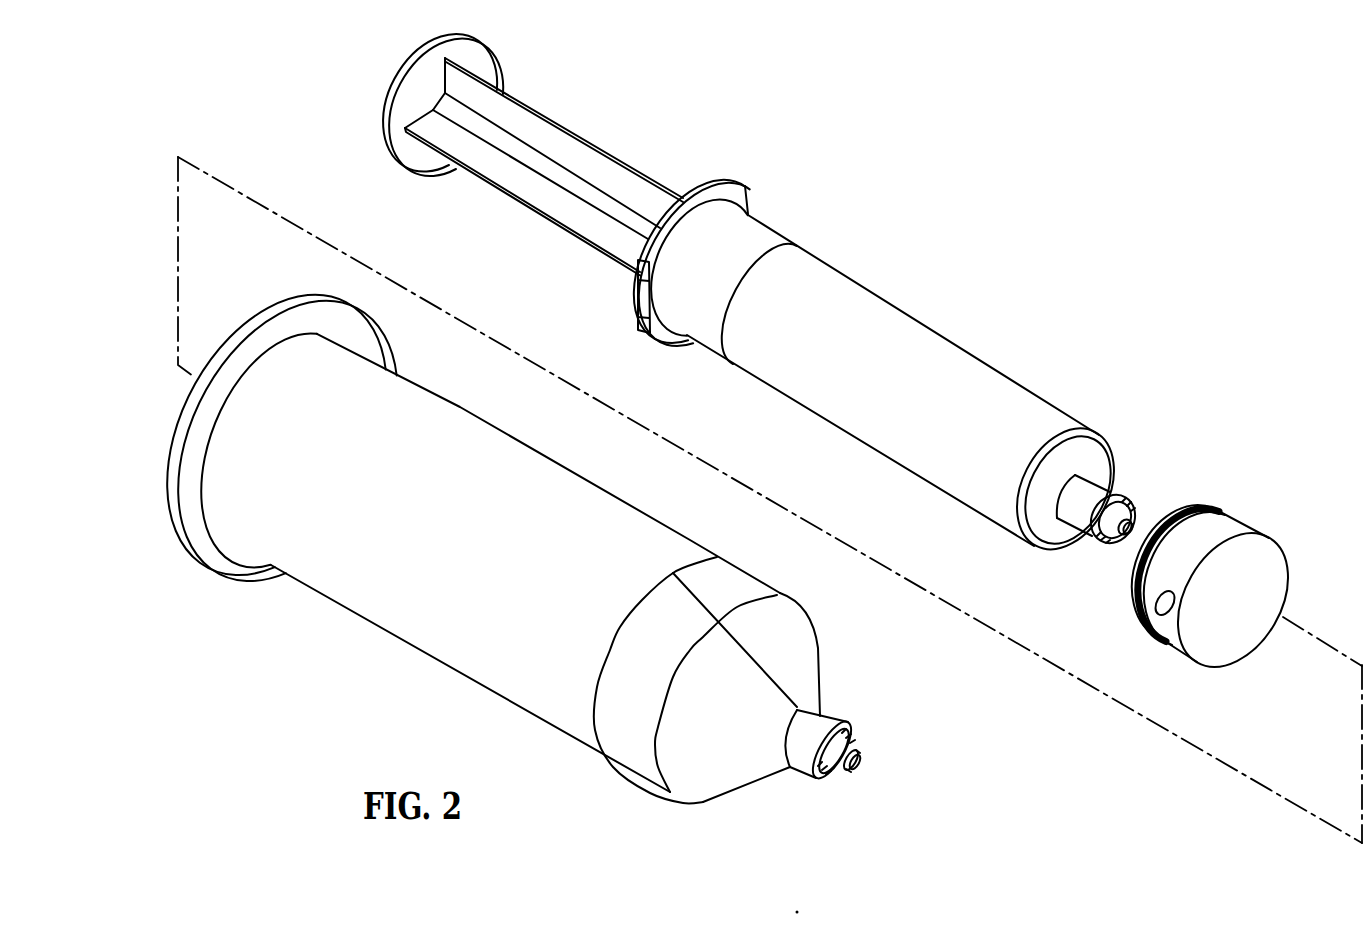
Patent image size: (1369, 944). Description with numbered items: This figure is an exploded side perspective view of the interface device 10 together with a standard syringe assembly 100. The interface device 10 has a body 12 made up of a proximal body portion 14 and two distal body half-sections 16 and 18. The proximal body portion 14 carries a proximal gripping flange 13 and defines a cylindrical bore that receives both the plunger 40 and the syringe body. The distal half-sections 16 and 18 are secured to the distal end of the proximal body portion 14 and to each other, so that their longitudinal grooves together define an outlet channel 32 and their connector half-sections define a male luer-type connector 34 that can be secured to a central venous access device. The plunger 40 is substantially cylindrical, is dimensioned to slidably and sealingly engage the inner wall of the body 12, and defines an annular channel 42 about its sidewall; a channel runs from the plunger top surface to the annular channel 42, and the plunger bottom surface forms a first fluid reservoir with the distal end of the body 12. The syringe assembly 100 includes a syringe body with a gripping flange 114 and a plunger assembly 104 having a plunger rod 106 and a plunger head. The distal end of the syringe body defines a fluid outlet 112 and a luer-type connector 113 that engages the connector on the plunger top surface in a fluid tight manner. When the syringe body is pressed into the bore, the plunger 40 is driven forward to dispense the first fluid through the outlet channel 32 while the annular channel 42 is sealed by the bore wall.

The interface device 10 is at (372, 650).
The body 12 is at (332, 600).
The proximal gripping flange 13 is at (185, 512).
The proximal body portion 14 is at (610, 494).
The distal body half-section 16 is at (737, 773).
The distal body half-section 18 is at (792, 633).
The outlet channel 32 is at (862, 765).
The male luer-type connector 34 is at (830, 722).
The plunger 40 is at (1272, 535).
The annular channel 42 is at (1207, 533).
The syringe assembly 100 is at (942, 260).
The plunger assembly 104 is at (536, 102).
The plunger rod 106 is at (532, 192).
The fluid outlet 112 is at (1129, 497).
The luer-type connector 113 is at (1085, 485).
The gripping flange 114 is at (737, 186).